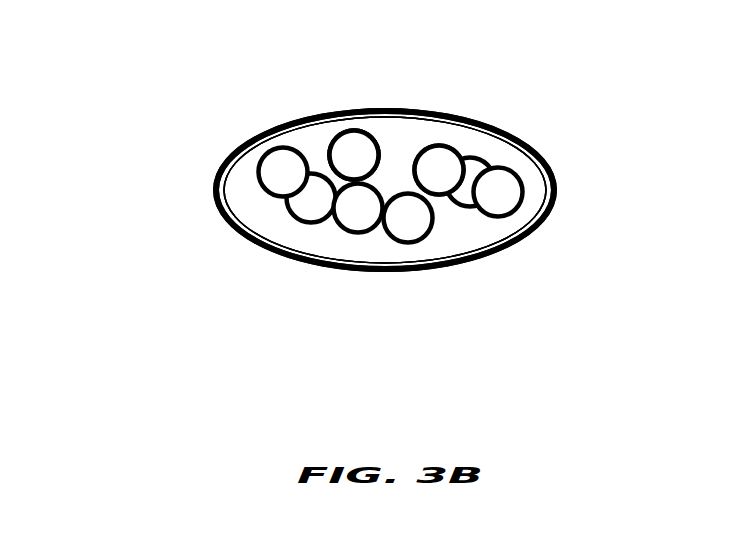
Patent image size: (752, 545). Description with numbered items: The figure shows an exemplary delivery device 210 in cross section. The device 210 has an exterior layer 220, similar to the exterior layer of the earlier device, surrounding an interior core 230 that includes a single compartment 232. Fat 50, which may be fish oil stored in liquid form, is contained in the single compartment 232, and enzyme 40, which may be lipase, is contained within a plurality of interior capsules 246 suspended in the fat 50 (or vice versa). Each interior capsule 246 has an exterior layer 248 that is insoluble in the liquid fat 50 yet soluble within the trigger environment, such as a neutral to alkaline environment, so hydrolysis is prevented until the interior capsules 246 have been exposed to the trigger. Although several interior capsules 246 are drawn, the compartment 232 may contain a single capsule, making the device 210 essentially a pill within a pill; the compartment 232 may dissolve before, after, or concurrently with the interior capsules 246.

The device 210 is at (190, 215).
The exterior layer 220 is at (522, 118).
The single compartment 232 is at (322, 244).
The fat 50 is at (243, 188).
The interior core 230 is at (464, 232).
The exterior layer 248 is at (334, 133).
The enzyme 40 is at (352, 142).
The interior capsules 246 is at (393, 163).